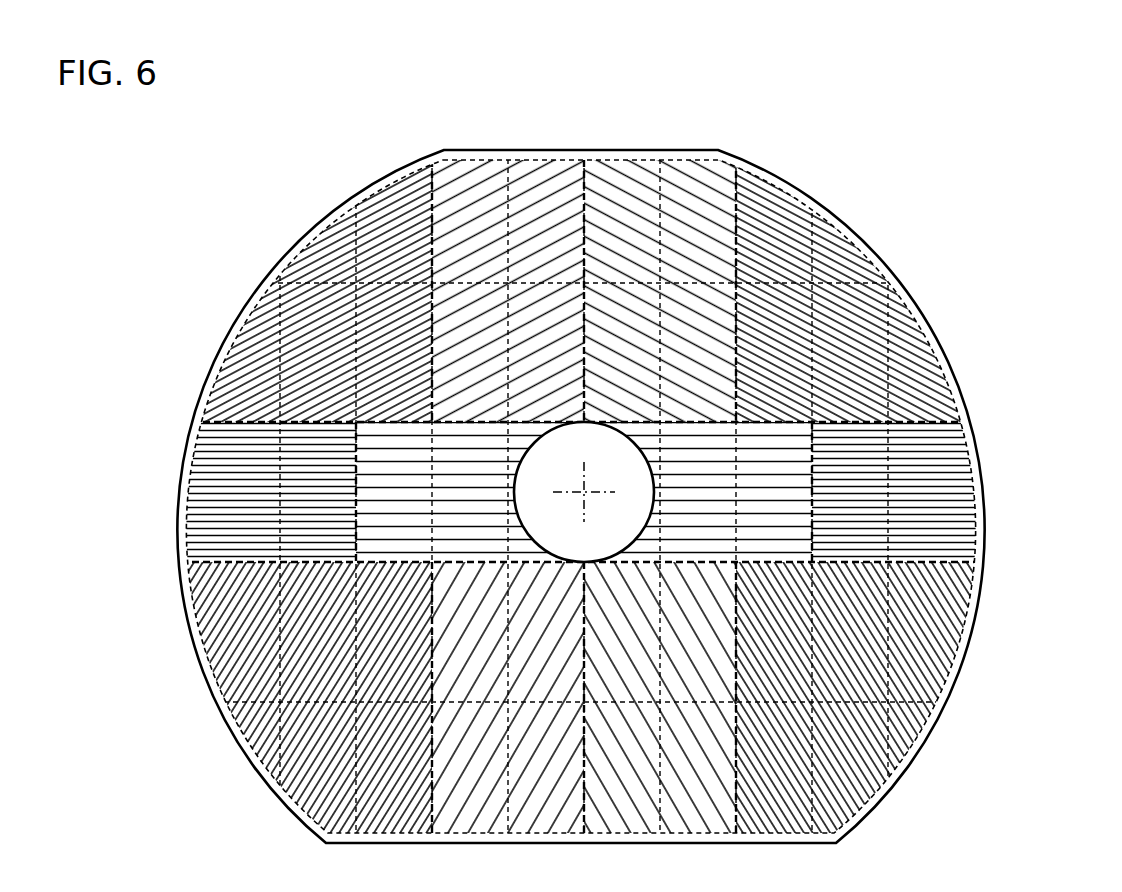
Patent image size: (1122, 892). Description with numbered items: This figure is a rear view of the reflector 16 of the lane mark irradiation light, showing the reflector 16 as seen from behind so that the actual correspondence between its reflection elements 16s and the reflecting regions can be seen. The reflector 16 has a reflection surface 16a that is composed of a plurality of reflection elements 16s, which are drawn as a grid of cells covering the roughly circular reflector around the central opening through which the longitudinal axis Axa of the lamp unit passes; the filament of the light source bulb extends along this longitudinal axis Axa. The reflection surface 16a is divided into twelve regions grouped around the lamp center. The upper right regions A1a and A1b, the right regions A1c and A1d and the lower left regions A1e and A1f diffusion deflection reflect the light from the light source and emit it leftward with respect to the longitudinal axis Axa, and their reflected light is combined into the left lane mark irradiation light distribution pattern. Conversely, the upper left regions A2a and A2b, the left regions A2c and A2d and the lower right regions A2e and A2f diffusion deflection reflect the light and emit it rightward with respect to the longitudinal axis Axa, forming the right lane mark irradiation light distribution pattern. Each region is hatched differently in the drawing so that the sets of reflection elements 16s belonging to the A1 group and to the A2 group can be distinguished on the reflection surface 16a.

The reflector 16 is at (972, 234).
The reflection surface 16a is at (855, 378).
The reflection elements 16s is at (810, 677).
The longitudinal axis Axa is at (582, 493).
The upper right region A1a is at (868, 291).
The upper right region A1b is at (660, 291).
The right region A1c is at (906, 492).
The right region A1d is at (698, 492).
The lower left region A1e is at (301, 697).
The lower left region A1f is at (508, 697).
The upper left region A2a is at (301, 291).
The upper left region A2b is at (508, 291).
The left region A2c is at (263, 492).
The left region A2d is at (470, 492).
The lower right region A2e is at (868, 697).
The lower right region A2f is at (660, 697).